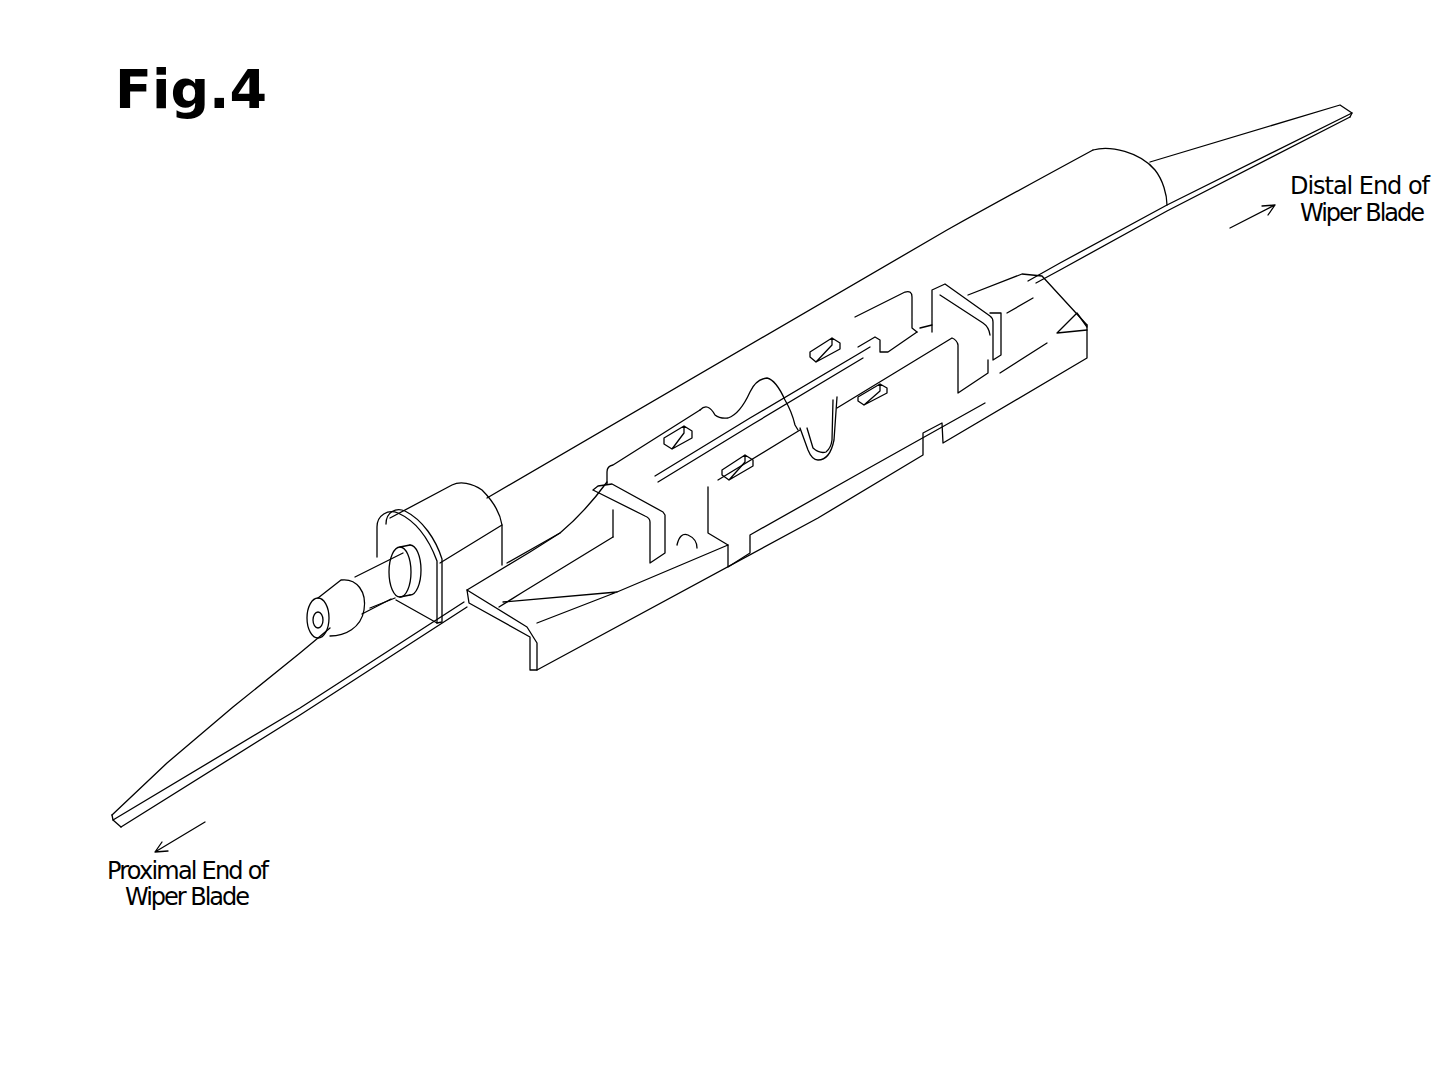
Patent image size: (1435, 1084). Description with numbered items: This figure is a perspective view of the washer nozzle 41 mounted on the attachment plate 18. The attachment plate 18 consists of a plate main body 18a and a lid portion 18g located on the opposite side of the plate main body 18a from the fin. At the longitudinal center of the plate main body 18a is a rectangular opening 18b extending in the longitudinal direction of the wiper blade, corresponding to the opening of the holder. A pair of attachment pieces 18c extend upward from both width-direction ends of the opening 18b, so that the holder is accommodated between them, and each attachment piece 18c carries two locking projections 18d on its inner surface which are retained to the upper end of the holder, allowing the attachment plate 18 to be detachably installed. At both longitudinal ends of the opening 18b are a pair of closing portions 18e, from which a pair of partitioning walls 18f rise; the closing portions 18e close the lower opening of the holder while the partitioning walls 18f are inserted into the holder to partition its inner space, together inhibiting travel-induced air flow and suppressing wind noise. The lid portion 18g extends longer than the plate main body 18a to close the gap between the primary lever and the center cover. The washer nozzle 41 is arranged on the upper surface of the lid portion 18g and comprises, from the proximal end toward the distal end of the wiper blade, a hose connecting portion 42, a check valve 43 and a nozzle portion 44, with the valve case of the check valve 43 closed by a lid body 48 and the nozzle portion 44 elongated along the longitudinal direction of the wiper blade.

The attachment plate 18 is at (857, 220).
The plate main body 18a is at (850, 490).
The rectangular opening 18b is at (693, 543).
The attachment pieces 18c is at (797, 418).
The locking projections 18d is at (841, 335).
The closing portions 18e is at (577, 580).
The partitioning walls 18f is at (632, 533).
The lid portion 18g is at (275, 683).
The washer nozzle 41 is at (469, 471).
The hose connecting portion 42 is at (362, 578).
The check valve 43 is at (425, 513).
The nozzle portion 44 is at (625, 430).
The lid body 48 is at (387, 538).